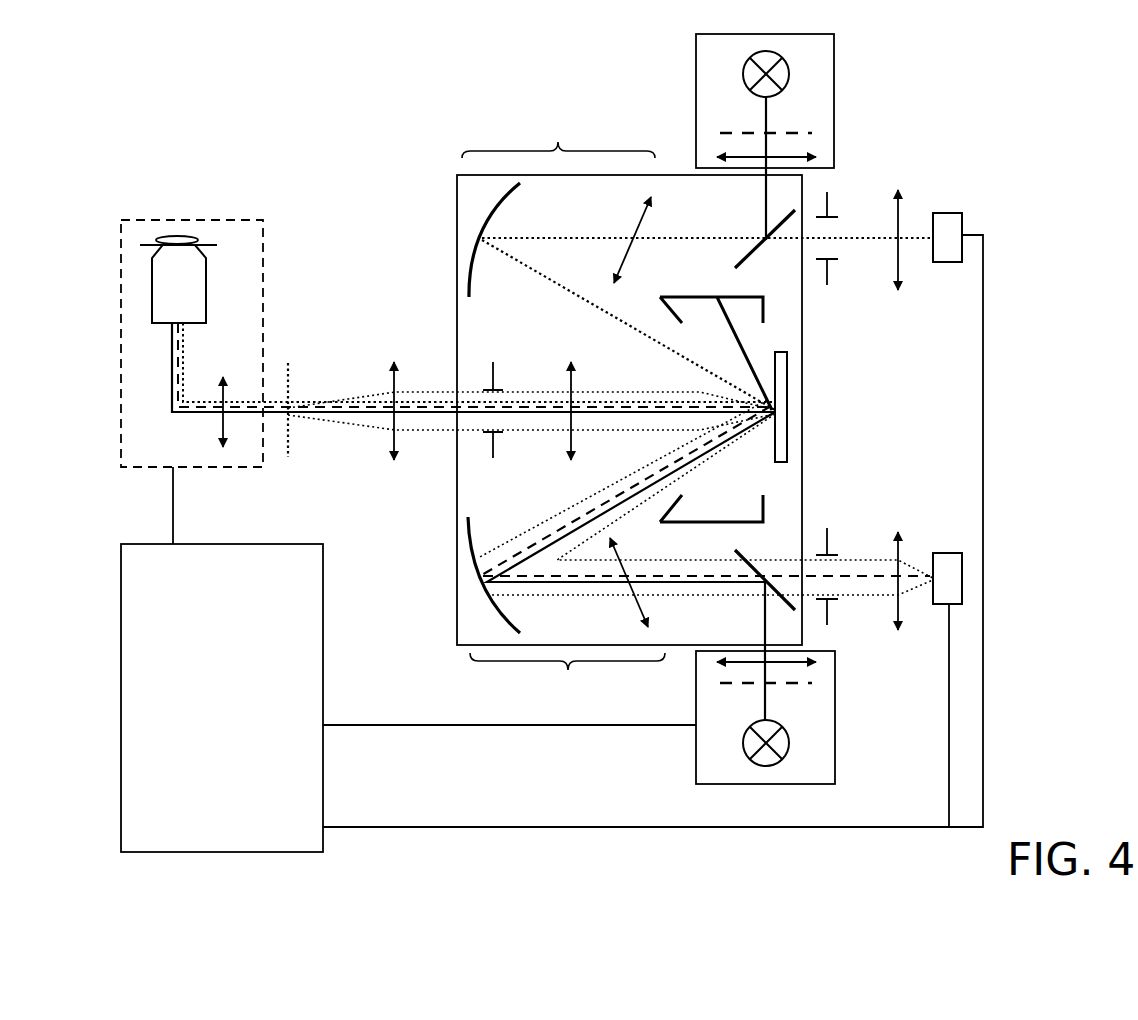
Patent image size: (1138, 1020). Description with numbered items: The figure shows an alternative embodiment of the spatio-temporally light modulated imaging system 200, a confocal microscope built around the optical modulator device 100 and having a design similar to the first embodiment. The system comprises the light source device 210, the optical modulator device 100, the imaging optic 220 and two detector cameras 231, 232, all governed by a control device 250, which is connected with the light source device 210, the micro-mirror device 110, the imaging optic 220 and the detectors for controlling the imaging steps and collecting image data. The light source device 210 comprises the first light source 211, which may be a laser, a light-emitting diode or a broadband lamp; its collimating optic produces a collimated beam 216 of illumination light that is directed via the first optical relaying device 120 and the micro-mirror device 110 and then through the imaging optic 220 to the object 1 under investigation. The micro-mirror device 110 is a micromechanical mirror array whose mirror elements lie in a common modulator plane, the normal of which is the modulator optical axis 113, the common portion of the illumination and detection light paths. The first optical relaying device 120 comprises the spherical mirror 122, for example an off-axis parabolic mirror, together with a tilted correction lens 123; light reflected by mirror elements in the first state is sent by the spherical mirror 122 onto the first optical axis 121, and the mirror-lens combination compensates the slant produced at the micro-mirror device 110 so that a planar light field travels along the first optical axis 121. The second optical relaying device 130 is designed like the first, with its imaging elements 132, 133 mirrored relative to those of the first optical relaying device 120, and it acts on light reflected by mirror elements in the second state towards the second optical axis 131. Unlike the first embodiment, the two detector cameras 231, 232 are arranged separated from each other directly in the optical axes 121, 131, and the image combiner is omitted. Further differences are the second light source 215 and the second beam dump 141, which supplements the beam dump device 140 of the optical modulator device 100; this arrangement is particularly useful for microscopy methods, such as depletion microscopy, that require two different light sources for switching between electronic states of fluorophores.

The spatio-temporally light modulated imaging system 200 is at (228, 160).
The object 1 is at (188, 243).
The imaging optic 220 is at (317, 314).
The modulator optical axis 113 is at (325, 418).
The optical modulator device 100 is at (720, 204).
The second optical relaying device 130 is at (580, 134).
The imaging element 132 is at (490, 220).
The imaging element 133 is at (637, 226).
The second optical axis 131 is at (550, 240).
The collimated beam 216 is at (747, 254).
The second light source 215 is at (786, 77).
The detector camera 231 is at (946, 228).
The beam dump device 140 is at (764, 305).
The second beam dump 141 is at (765, 505).
The micro-mirror device 110 is at (778, 440).
The first optical axis 121 is at (655, 580).
The spherical mirror 122 is at (480, 590).
The tilted correction lens 123 is at (630, 608).
The first optical relaying device 120 is at (592, 702).
The light source device 210 is at (740, 724).
The first light source 211 is at (769, 757).
The detector camera 232 is at (958, 595).
The control device 250 is at (190, 842).